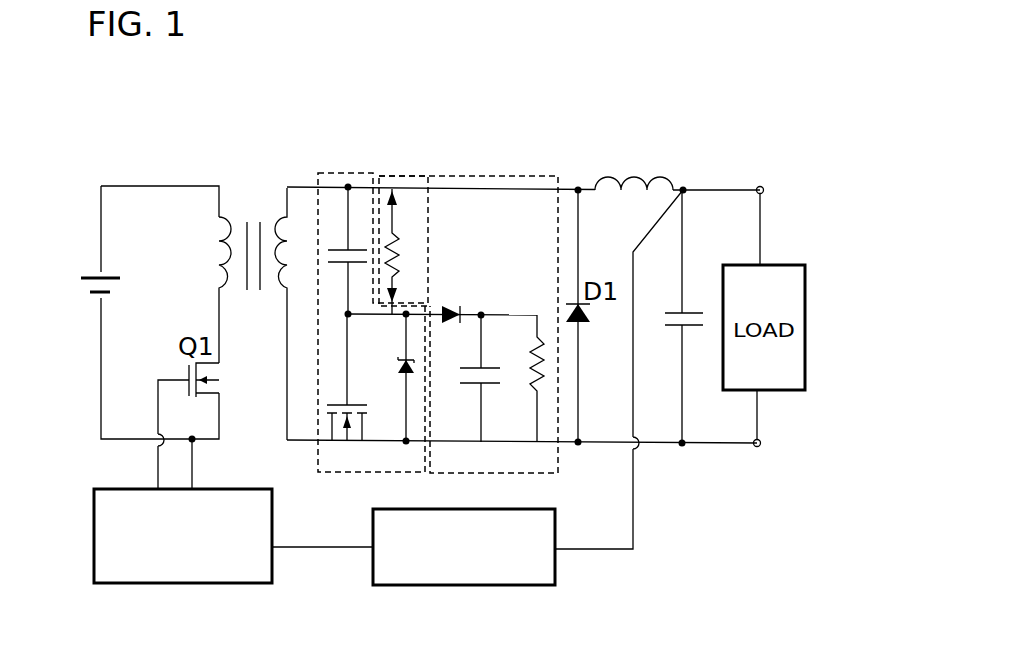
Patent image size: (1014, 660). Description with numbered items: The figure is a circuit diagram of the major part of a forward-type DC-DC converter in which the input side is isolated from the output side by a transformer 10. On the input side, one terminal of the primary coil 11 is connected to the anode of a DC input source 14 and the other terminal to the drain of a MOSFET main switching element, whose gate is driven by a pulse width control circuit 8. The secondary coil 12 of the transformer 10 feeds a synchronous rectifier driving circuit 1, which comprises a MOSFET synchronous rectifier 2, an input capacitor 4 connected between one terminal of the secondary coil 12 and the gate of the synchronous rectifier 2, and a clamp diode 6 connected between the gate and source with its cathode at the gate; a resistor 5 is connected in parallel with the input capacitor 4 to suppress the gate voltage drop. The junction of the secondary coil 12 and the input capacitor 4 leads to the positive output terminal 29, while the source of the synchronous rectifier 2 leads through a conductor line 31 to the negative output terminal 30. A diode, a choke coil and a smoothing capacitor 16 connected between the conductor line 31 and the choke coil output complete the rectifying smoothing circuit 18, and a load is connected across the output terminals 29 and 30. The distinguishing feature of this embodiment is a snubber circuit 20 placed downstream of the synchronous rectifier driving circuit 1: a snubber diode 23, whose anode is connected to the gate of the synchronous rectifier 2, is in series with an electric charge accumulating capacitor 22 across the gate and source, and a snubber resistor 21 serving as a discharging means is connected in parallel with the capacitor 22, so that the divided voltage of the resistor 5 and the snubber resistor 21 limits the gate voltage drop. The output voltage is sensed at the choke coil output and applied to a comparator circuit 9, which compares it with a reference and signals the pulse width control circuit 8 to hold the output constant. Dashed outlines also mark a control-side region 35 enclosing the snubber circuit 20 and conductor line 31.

The synchronous rectifier driving circuit 1 is at (347, 173).
The synchronous rectifier 2 is at (355, 455).
The input capacitor 4 is at (342, 247).
The resistor 5 is at (405, 236).
The clamp diode 6 is at (403, 360).
The pulse width control circuit 8 is at (190, 585).
The comparator circuit 9 is at (493, 587).
The transformer 10 is at (256, 240).
The primary coil 11 is at (215, 257).
The secondary coil 12 is at (287, 292).
The DC input source 14 is at (86, 286).
The smoothing capacitor 16 is at (664, 311).
The rectifying smoothing circuit 18 is at (597, 178).
The snubber circuit 20 is at (415, 176).
The snubber resistor 21 is at (535, 391).
The electric charge accumulating capacitor 22 is at (497, 373).
The snubber diode 23 is at (450, 306).
The output terminal 29 is at (758, 186).
The output terminal 30 is at (757, 447).
The conductor line 31 is at (518, 447).
The control circuit 35 is at (510, 176).